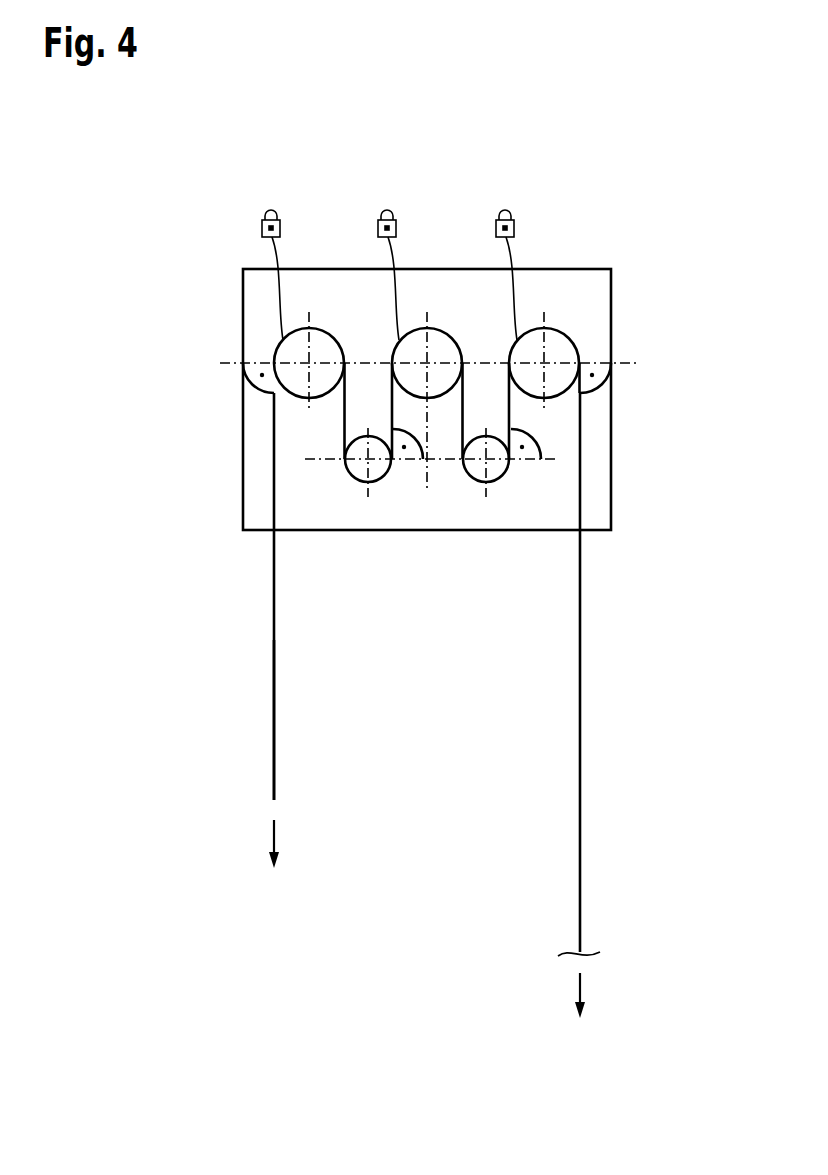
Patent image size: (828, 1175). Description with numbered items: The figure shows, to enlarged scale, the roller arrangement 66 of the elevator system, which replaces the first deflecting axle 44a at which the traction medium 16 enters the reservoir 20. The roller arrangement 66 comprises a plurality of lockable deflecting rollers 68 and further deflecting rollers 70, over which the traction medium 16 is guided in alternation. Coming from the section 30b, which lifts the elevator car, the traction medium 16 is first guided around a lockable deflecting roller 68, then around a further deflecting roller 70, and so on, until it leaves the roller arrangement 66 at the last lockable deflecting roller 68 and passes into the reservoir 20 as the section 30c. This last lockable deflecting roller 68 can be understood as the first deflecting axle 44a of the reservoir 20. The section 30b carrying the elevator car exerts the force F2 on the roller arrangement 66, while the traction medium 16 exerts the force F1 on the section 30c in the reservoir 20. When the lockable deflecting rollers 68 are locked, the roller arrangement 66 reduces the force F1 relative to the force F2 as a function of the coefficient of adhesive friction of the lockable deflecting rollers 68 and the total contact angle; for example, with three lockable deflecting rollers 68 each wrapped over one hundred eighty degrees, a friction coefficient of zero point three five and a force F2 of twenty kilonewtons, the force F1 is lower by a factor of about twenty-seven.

The traction medium 16 is at (274, 603).
The reservoir 20 is at (274, 688).
The section for lifting the elevator car 30b is at (580, 740).
The section in the reservoir 30c is at (274, 772).
The first deflecting axle 44a is at (296, 355).
The roller arrangement 66 is at (611, 300).
The lockable deflecting rollers 68 is at (330, 327).
The further deflecting rollers 70 is at (352, 480).
The force exerted by the traction medium on the section in the reservoir F1 is at (274, 836).
The force exerted by the section with the elevator car F2 is at (579, 990).